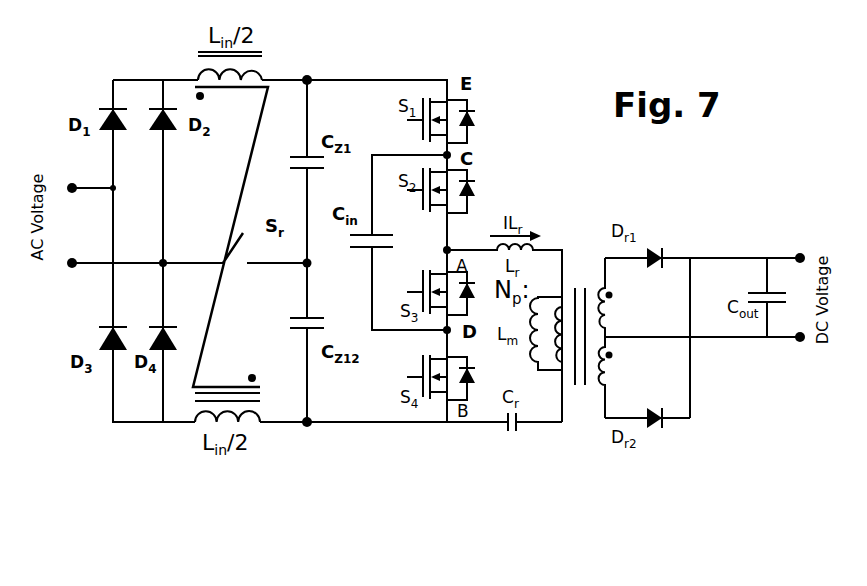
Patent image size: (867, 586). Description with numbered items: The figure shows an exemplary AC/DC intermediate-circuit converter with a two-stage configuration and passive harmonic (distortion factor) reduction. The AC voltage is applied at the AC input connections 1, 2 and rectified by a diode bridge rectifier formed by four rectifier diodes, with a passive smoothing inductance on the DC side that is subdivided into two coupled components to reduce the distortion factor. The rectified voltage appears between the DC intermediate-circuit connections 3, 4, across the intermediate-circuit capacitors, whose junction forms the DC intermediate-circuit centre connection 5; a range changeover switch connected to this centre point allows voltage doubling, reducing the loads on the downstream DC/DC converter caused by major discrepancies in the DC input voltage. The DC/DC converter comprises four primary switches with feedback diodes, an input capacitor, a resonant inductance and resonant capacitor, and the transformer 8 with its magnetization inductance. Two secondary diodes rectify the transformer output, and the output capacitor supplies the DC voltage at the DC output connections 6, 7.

The AC input connection 1 is at (91, 175).
The AC input connection 2 is at (90, 277).
The DC intermediate-circuit connection 3 is at (316, 63).
The DC intermediate-circuit connection 4 is at (312, 439).
The DC intermediate-circuit centre connection 5 is at (318, 275).
The DC output connection 6 is at (786, 244).
The DC output connection 7 is at (786, 353).
The transformer 8 is at (583, 321).